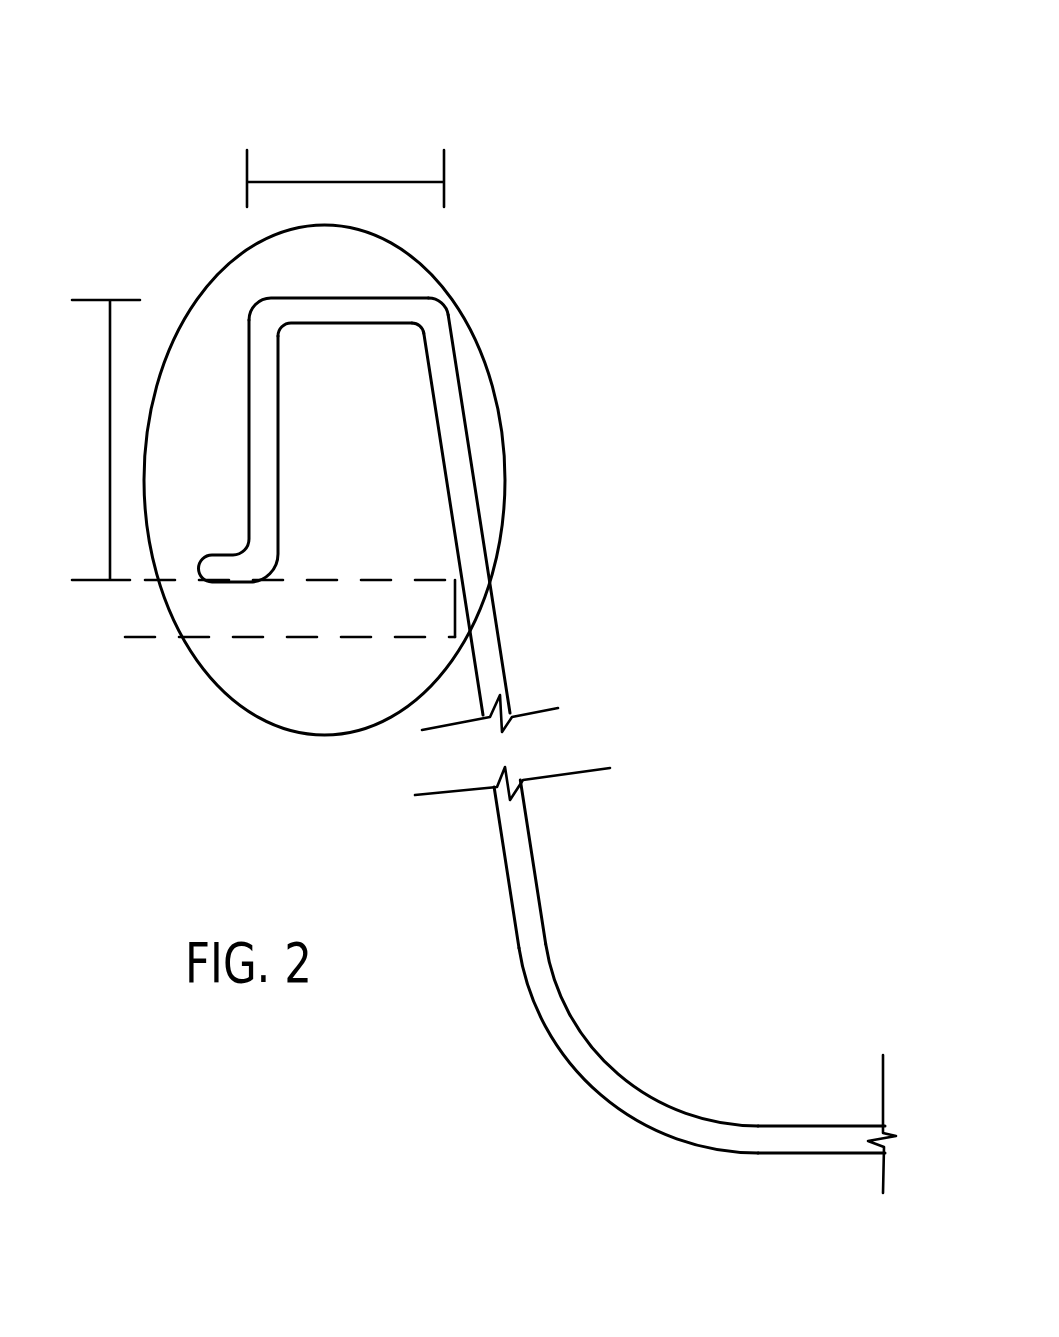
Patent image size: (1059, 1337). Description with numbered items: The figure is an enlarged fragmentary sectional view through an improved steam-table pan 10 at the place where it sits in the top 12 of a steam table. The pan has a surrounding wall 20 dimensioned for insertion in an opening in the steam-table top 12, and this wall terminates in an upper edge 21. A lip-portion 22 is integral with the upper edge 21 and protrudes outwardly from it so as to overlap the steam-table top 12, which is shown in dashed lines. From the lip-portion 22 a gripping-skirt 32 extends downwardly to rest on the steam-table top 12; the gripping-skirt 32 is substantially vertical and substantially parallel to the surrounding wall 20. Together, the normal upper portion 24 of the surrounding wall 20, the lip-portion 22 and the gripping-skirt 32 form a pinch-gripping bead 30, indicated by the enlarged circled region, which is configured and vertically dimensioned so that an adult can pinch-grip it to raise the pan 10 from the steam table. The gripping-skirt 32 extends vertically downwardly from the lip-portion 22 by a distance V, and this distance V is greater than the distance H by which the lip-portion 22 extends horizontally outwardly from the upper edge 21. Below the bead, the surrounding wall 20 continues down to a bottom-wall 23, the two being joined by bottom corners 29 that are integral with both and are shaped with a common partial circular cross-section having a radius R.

The steam-table pan 10 is at (610, 107).
The top of the steam table 12 is at (428, 575).
The surrounding wall 20 is at (503, 642).
The upper edge 21 is at (448, 313).
The lip-portion 22 is at (385, 298).
The bottom-wall 23 is at (855, 1126).
The upper portion of surrounding wall 24 is at (462, 382).
The bottom corners 29 is at (693, 1102).
The pinch-gripping bead 30 is at (237, 257).
The gripping-skirt 32 is at (248, 443).
The radius R is at (633, 1065).
The horizontal distance H is at (288, 182).
The vertical dimension V is at (110, 408).